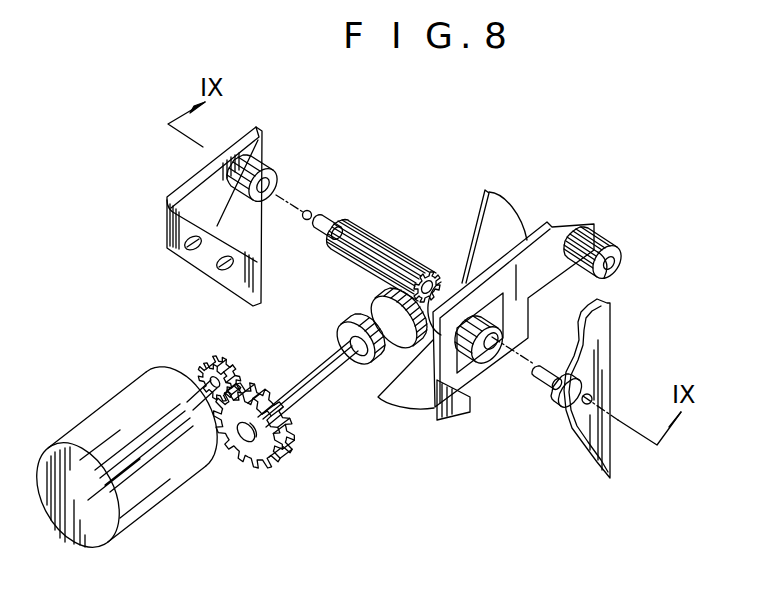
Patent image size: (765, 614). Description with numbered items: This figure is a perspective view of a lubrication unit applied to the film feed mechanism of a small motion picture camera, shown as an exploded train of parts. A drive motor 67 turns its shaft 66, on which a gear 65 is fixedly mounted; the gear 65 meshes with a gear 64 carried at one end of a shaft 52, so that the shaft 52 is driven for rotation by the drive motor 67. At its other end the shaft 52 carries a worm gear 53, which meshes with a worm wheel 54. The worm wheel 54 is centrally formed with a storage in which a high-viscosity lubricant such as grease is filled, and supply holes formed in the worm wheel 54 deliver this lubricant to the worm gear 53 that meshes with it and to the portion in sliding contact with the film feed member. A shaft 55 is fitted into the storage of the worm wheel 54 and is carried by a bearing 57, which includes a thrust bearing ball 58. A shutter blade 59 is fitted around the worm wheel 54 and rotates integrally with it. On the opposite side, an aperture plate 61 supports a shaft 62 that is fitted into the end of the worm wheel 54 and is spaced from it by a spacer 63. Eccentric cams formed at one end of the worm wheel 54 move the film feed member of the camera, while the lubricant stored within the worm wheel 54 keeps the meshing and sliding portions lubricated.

The shaft 52 is at (323, 383).
The worm gear 53 is at (340, 326).
The worm wheel 54 is at (398, 248).
The shaft 55 is at (338, 228).
The bearing 57 is at (266, 178).
The thrust bearing ball 58 is at (309, 211).
The shutter blade 59 is at (503, 220).
The aperture plate 61 is at (555, 231).
The shaft 62 is at (542, 378).
The spacer 63 is at (563, 398).
The gear 64 is at (277, 452).
The gear 65 is at (244, 332).
The shaft of the drive motor 66 is at (193, 388).
The drive motor 67 is at (183, 467).